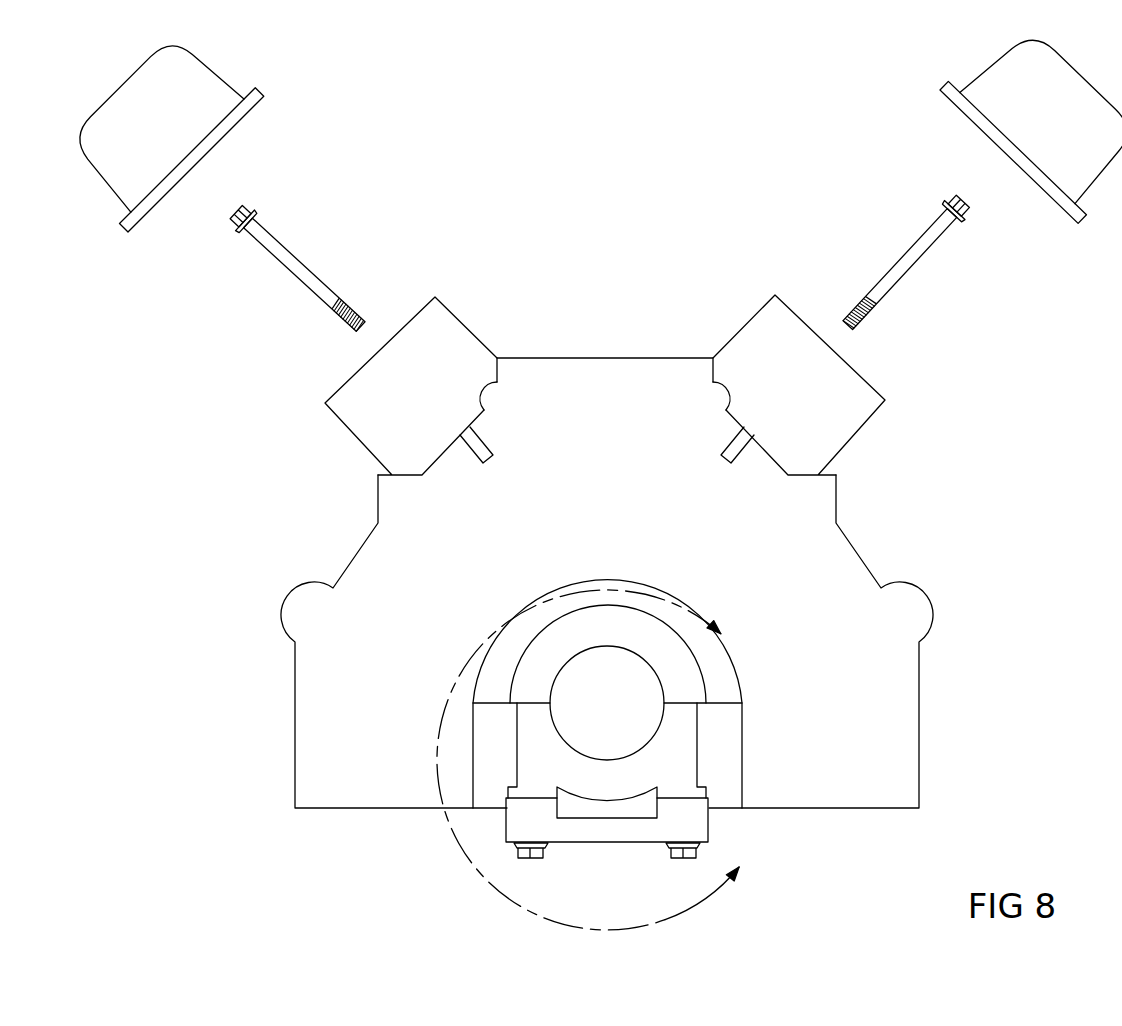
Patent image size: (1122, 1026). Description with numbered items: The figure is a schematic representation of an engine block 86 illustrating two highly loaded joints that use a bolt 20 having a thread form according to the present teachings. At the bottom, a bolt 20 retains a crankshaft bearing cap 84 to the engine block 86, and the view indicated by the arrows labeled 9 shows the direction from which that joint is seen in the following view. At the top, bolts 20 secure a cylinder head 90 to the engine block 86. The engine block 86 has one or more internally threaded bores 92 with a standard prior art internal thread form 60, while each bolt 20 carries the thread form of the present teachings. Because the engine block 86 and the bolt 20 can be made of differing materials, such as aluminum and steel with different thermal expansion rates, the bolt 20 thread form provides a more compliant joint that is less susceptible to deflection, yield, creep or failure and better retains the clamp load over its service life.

The bolt 20 is at (838, 270).
The engine block 86 is at (588, 368).
The cylinder head 90 is at (753, 330).
The internal thread form 60 is at (722, 443).
The internally threaded bore 92 is at (741, 462).
The crankshaft bearing cap 84 is at (690, 752).
The view direction indicator for FIG. 9 is at (598, 760).